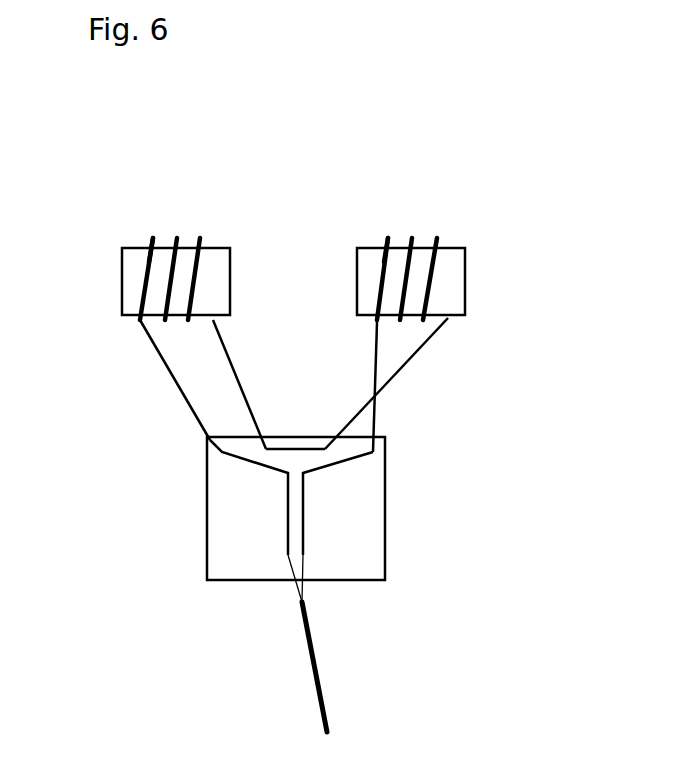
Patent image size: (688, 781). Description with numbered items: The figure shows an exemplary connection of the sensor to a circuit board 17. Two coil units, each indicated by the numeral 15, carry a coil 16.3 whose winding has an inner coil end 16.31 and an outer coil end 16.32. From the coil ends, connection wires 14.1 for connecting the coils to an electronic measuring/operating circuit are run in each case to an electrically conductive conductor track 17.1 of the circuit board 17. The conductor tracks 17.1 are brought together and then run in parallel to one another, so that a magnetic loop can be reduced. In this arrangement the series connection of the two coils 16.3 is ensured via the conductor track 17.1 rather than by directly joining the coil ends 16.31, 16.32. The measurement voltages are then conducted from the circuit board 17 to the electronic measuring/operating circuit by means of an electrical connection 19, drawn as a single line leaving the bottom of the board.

The connection wire 14.1 is at (175, 390).
The magnet device 15 is at (213, 245).
The coil 16.3 is at (167, 222).
The inner coil end 16.31 is at (133, 238).
The outer coil end 16.32 is at (220, 320).
The circuit board 17 is at (360, 567).
The conductor track 17.1 is at (327, 450).
The electrical connection 19 is at (327, 685).